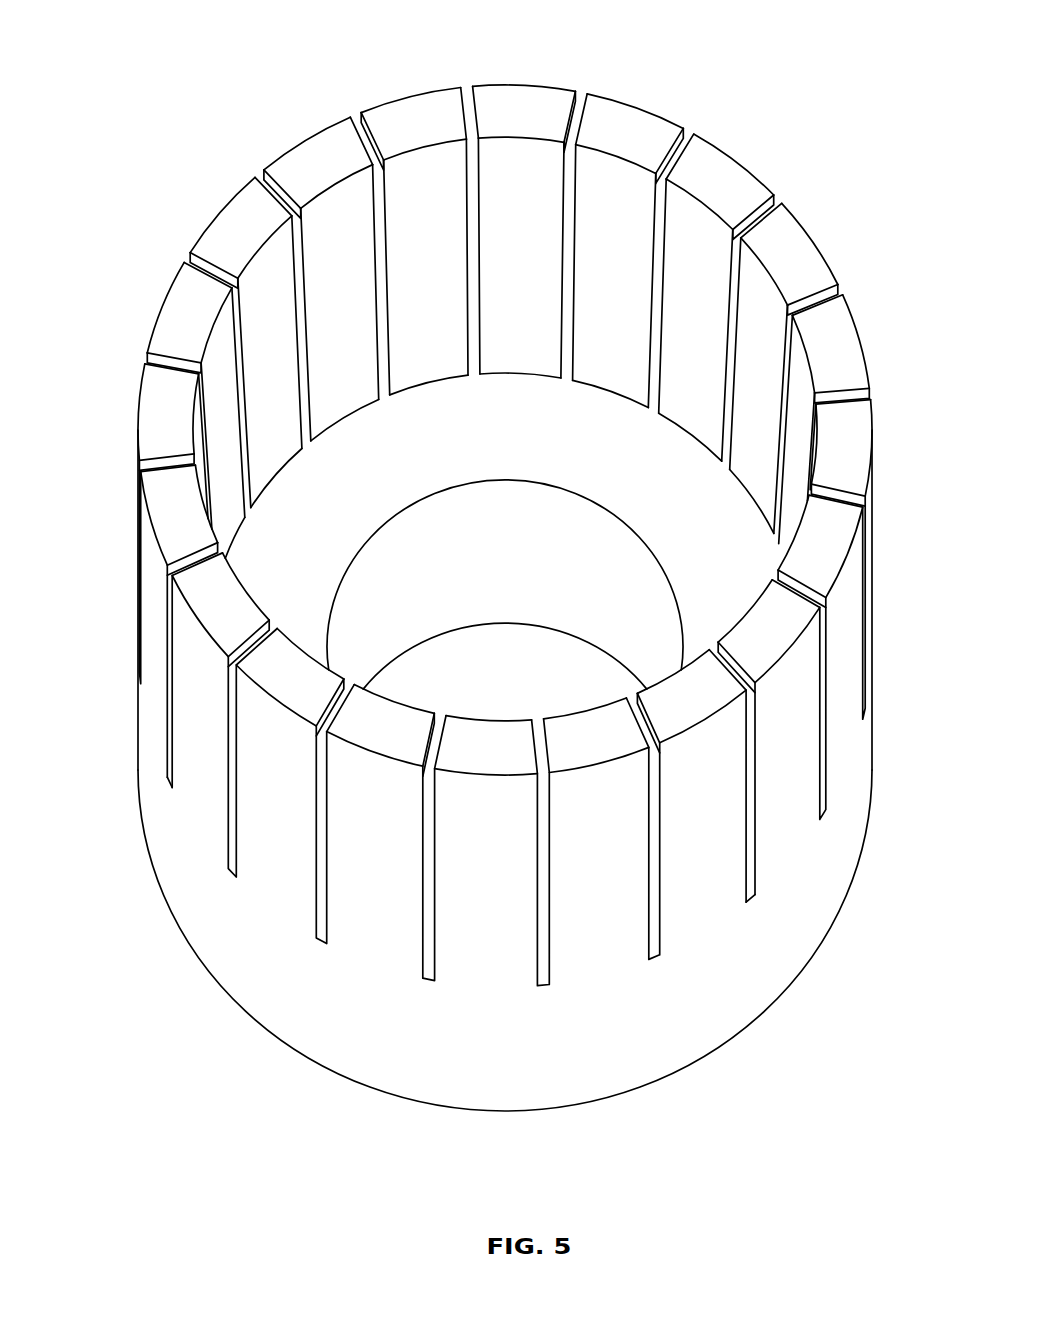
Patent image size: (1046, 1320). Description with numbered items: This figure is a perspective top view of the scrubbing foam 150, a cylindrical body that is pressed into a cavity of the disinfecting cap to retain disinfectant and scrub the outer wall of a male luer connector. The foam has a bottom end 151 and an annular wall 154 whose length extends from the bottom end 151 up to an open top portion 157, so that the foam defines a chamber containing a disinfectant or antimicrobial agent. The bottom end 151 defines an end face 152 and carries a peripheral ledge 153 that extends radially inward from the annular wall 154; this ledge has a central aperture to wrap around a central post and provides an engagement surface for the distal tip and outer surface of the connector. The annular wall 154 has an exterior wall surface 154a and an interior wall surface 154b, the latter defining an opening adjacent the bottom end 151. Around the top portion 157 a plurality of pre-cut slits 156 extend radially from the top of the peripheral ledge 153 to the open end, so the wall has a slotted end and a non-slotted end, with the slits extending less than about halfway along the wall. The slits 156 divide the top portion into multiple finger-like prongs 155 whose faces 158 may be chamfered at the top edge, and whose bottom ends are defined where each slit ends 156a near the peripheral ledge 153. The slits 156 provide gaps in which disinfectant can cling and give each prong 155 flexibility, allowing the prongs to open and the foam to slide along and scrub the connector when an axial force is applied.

The scrubbing foam 150 is at (872, 660).
The bottom end 151 is at (512, 1112).
The end face 152 is at (445, 670).
The peripheral ledge 153 is at (565, 445).
The annular wall 154 is at (160, 656).
The exterior wall surface 154a is at (175, 790).
The interior wall surface 154b is at (430, 165).
The prongs 155 is at (311, 135).
The slits 156 is at (762, 215).
The slit end 156a is at (752, 905).
The top portion 157 is at (137, 605).
The faces of the prongs 158 is at (537, 84).